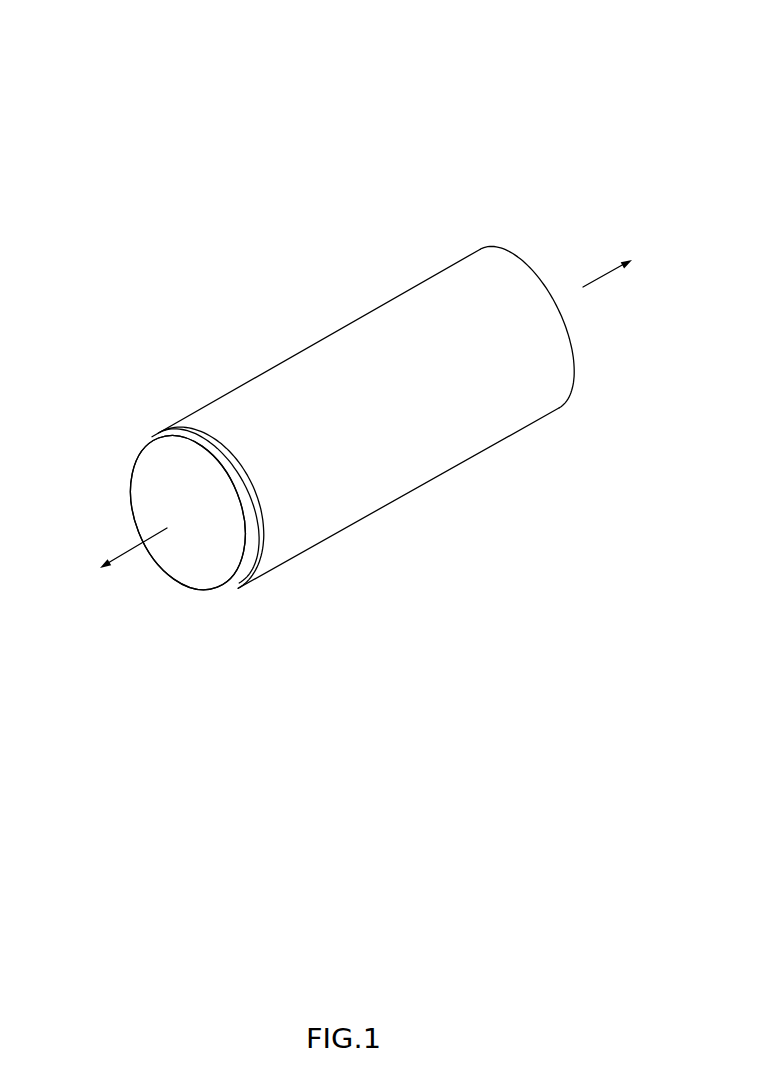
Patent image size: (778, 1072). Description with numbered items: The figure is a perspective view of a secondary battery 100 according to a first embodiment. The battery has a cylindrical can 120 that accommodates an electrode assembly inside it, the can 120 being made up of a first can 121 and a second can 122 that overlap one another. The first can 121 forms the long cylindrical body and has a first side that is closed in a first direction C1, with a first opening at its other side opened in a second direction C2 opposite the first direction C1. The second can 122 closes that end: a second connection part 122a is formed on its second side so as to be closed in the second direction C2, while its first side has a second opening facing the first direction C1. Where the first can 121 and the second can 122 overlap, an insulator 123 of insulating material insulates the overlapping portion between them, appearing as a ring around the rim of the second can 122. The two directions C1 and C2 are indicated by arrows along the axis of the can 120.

The secondary battery 100 is at (197, 48).
The can 120 is at (583, 633).
The first can 121 is at (424, 275).
The second can 122 is at (208, 601).
The second connection part 122a is at (160, 474).
The insulator 123 is at (254, 582).
The first direction C1 is at (607, 263).
The second direction C2 is at (133, 543).